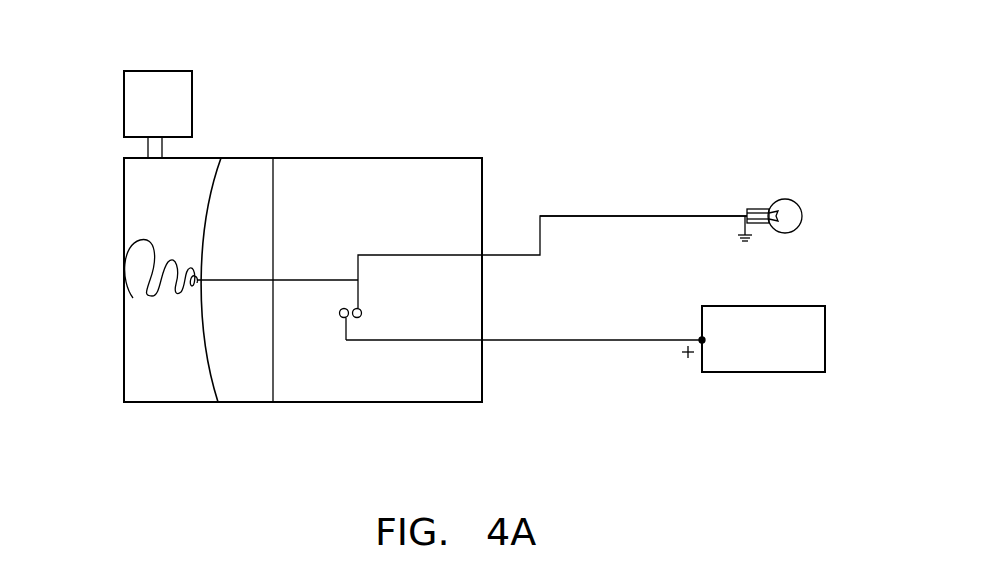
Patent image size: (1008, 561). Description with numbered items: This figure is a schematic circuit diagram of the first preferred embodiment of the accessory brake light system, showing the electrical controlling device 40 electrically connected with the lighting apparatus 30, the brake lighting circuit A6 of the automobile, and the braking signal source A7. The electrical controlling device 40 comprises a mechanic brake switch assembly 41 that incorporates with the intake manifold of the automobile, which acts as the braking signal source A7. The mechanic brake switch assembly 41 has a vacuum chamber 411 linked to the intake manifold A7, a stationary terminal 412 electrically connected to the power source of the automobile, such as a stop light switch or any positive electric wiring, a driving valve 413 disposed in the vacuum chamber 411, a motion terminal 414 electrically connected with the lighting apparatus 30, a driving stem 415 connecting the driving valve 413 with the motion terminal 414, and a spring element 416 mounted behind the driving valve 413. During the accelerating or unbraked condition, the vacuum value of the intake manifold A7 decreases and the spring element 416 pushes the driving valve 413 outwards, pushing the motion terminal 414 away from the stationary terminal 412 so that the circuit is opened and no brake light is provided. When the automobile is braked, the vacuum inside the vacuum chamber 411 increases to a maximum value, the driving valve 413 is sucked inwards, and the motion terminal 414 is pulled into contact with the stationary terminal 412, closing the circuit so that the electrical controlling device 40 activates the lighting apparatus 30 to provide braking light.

The lighting apparatus 30 is at (785, 190).
The electrical controlling device 40 is at (603, 208).
The mechanic brake switch assembly 41 is at (248, 150).
The vacuum chamber 411 is at (147, 382).
The stationary terminal 412 is at (340, 318).
The driving valve 413 is at (212, 383).
The motion terminal 414 is at (360, 318).
The driving stem 415 is at (297, 275).
The spring element 416 is at (140, 273).
The brake lighting circuit A6 is at (792, 354).
The braking signal source A7 is at (158, 98).